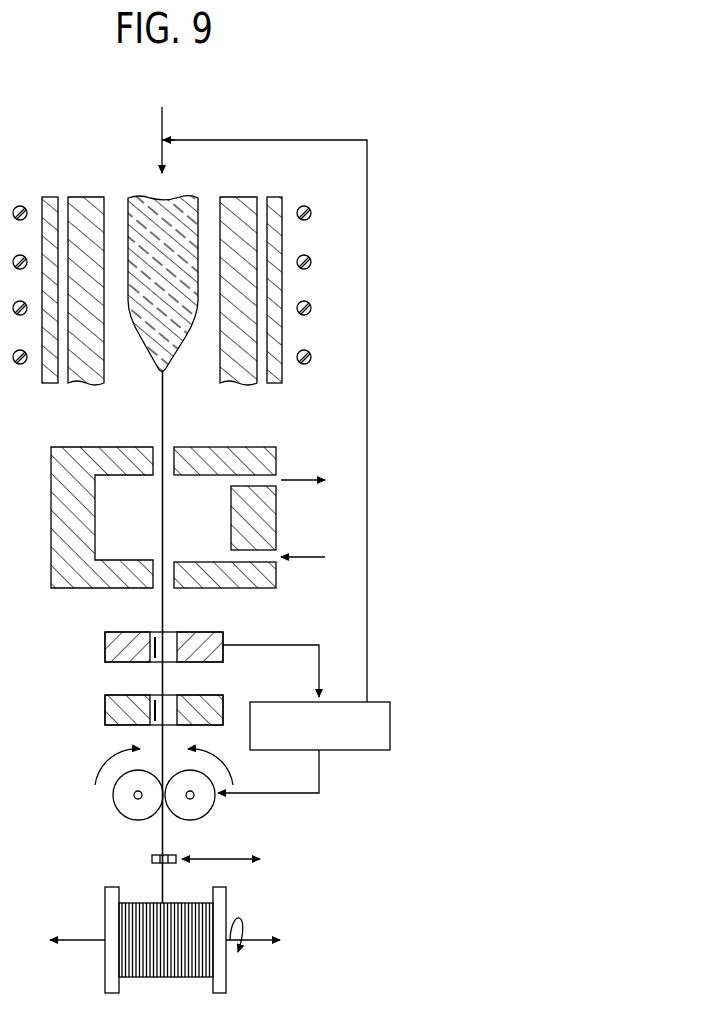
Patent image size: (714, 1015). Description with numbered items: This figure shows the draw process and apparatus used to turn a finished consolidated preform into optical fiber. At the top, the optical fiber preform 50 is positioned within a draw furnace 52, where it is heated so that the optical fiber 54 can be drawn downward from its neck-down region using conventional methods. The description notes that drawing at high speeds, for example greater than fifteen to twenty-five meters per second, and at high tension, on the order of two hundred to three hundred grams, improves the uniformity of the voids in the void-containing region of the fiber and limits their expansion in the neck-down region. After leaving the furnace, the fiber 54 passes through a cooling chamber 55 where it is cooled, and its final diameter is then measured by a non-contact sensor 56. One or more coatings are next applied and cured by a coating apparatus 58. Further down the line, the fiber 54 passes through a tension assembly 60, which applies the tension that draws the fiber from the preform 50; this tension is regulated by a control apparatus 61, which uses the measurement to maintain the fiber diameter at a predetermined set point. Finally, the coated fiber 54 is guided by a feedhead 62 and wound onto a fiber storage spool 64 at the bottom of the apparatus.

The optical fiber preform 50 is at (173, 197).
The draw furnace 52 is at (47, 188).
The optical fiber 54 is at (164, 606).
The cooling chamber 55 is at (52, 505).
The non-contact sensor 56 is at (105, 647).
The coating apparatus 58 is at (105, 710).
The tension assembly 60 is at (117, 812).
The control apparatus 61 is at (390, 725).
The feedhead 62 is at (152, 858).
The fiber storage spool 64 is at (105, 985).